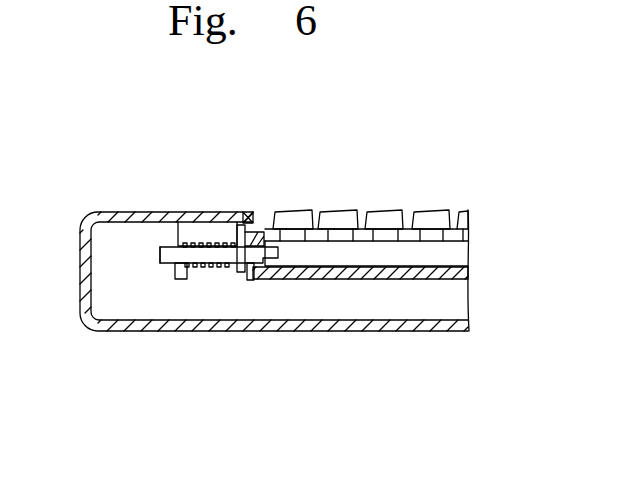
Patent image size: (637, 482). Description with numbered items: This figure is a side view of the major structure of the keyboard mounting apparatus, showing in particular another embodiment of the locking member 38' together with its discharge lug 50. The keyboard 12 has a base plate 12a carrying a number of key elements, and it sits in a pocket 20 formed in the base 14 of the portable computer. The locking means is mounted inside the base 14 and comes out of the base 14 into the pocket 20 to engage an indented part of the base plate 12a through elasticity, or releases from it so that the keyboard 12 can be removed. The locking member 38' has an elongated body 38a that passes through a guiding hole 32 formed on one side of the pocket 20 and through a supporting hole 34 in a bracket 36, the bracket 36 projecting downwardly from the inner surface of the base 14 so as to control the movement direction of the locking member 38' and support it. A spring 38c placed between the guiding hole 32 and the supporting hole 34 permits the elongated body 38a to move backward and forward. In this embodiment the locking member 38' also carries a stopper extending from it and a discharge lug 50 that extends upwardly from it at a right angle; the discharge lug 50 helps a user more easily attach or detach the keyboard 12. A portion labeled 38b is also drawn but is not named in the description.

The keyboard 12 is at (390, 204).
The base plate 12a is at (450, 258).
The base 14 is at (102, 212).
The pocket 20 is at (375, 280).
The guiding hole 32 is at (250, 280).
The supporting hole 34 is at (165, 247).
The bracket 36 is at (167, 273).
The locking member 38' is at (207, 191).
The elongated body 38a is at (213, 268).
The pin 38b is at (262, 223).
The spring 38c is at (193, 274).
The discharge lug 50 is at (264, 230).